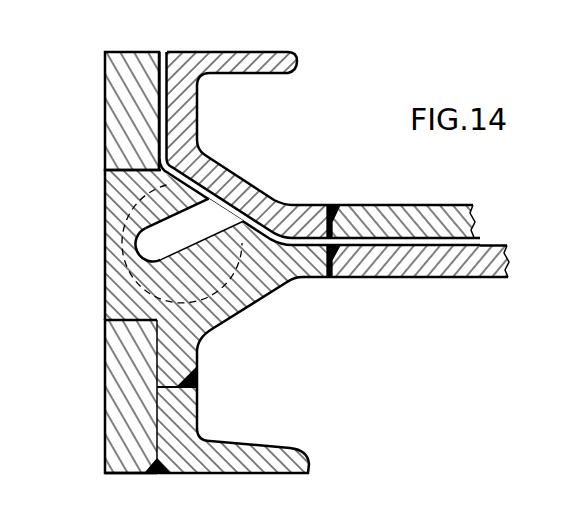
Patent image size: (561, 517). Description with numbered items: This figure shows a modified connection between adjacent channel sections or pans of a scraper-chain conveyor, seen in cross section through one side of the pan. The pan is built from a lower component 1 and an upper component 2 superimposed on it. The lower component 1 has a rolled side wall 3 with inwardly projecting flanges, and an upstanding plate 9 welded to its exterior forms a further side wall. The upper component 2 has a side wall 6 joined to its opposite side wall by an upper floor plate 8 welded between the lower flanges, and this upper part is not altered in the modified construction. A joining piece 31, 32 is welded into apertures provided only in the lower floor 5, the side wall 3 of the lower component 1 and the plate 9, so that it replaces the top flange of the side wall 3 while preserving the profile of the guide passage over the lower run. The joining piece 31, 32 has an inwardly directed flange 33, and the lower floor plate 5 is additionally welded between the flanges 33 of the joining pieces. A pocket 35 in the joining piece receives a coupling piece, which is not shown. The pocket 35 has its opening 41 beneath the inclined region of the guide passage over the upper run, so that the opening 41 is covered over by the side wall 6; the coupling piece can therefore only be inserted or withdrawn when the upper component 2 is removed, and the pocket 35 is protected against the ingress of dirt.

The lower component 1 is at (267, 318).
The upper component 2 is at (292, 137).
The side wall 3 is at (220, 453).
The floor plate 5 is at (416, 263).
The side wall 6 is at (188, 120).
The floor plate 8 is at (397, 217).
The plate 9 is at (120, 402).
The joining piece 31 is at (176, 276).
The joining piece 32 is at (176, 276).
The flange 33 is at (322, 268).
The pocket 35 is at (150, 238).
The opening 41 is at (345, 125).